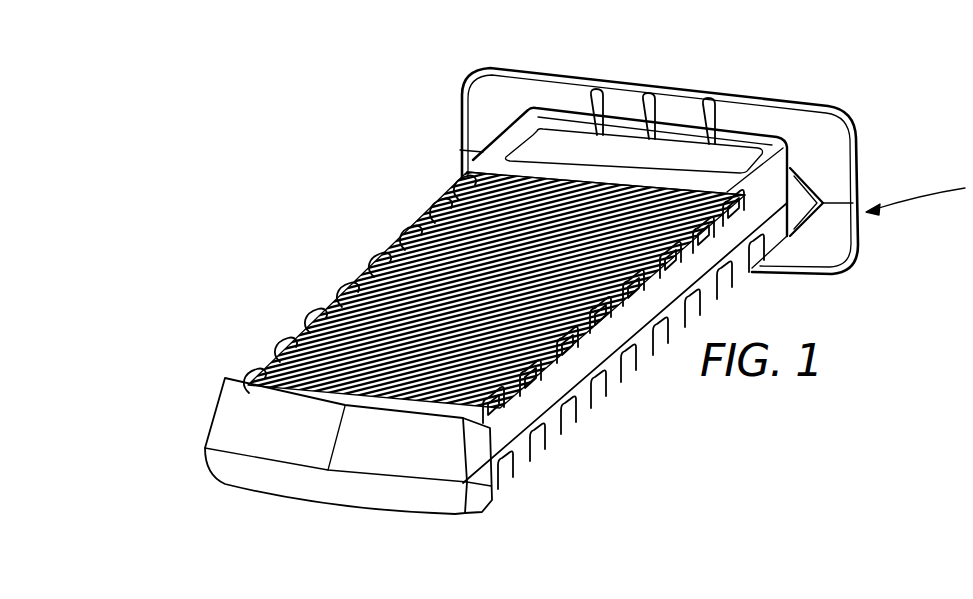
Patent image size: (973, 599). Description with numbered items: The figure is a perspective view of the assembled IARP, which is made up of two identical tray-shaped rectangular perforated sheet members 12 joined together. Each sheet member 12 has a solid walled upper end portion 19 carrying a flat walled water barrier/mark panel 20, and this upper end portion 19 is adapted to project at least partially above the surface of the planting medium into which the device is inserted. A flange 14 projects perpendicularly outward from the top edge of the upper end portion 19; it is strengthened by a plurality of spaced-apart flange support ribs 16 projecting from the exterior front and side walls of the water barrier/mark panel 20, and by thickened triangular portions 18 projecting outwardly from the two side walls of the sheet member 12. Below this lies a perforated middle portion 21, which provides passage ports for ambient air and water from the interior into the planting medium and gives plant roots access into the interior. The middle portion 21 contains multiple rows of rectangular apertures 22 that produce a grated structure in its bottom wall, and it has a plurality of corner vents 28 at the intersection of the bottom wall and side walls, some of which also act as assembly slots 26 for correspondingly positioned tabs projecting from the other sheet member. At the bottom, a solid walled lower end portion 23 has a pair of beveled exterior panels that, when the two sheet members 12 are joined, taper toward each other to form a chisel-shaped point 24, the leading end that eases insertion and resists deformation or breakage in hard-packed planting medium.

The perforated sheet member 12 is at (405, 222).
The flange 14 is at (820, 114).
The flange support ribs 16 is at (658, 110).
The thickened triangular portions 18 is at (810, 188).
The upper end portion 19 is at (748, 244).
The water barrier/mark panel 20 is at (634, 151).
The middle portion 21 is at (637, 360).
The rectangular apertures 22 is at (390, 405).
The lower end portion 23 is at (450, 498).
The chisel-shaped point 24 is at (332, 470).
The assembly slots 26 is at (560, 412).
The corner vents 28 is at (343, 278).